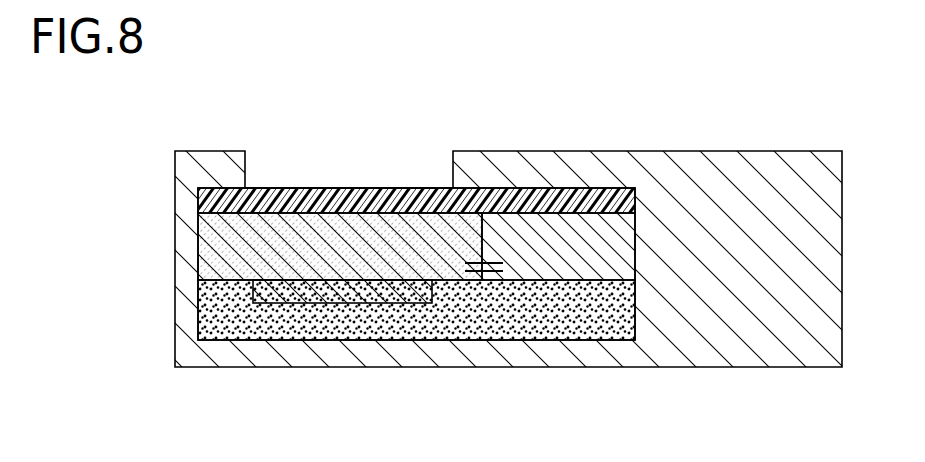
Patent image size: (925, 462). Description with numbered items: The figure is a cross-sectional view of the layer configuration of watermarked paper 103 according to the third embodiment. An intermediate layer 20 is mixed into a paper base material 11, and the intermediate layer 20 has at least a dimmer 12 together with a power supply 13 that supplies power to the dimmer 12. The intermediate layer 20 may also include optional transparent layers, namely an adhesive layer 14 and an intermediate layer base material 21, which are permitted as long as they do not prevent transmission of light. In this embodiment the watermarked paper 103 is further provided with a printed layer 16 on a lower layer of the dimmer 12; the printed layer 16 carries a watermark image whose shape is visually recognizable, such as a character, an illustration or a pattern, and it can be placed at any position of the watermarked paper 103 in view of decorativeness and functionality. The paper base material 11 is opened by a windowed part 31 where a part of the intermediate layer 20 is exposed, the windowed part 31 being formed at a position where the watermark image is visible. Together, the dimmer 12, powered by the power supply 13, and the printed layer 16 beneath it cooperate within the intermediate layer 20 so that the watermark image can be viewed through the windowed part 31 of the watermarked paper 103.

The watermarked paper 103 is at (462, 245).
The paper base material 11 is at (717, 168).
The dimmer 12 is at (293, 266).
The power supply 13 is at (567, 280).
The adhesive layer 14 is at (473, 313).
The printed layer 16 is at (375, 303).
The intermediate layer 20 is at (433, 137).
The intermediate layer base material 21 is at (536, 188).
The windowed part 31 is at (453, 146).